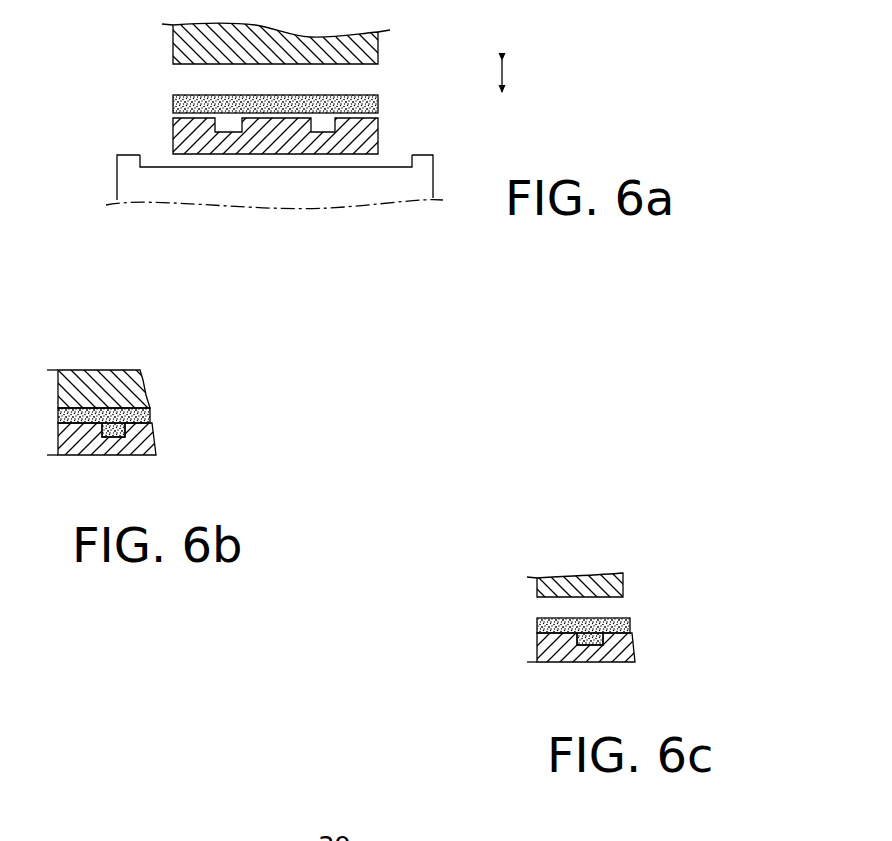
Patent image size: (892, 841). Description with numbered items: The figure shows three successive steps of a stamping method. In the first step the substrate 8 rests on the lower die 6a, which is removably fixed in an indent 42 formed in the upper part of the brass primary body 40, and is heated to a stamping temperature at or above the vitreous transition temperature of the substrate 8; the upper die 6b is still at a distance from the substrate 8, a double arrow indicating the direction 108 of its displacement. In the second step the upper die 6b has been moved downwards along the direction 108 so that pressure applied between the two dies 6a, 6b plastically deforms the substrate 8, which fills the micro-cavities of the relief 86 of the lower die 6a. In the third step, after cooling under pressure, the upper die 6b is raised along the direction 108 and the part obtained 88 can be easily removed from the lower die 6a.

In FIG. 6a, the lower die 6a is at (378, 140).
In FIG. 6b, the lower die 6a is at (156, 435).
In FIG. 6c, the lower die 6a is at (636, 640).
In FIG. 6a, the upper die 6b is at (378, 45).
In FIG. 6b, the upper die 6b is at (145, 378).
In FIG. 6c, the upper die 6b is at (623, 582).
In FIG. 6a, the substrate 8 is at (173, 97).
In FIG. 6b, the substrate 8 is at (150, 413).
In FIG. 6c, the substrate 8 is at (630, 620).
In FIG. 6a, the primary body 40 is at (127, 183).
In FIG. 6a, the indent 42 is at (147, 155).
In FIG. 6a, the relief 86 is at (330, 113).
In FIG. 6b, the relief 86 is at (118, 440).
In FIG. 6c, the relief 86 is at (600, 650).
In FIG. 6c, the part obtained 88 is at (535, 618).
In FIG. 6a, the direction 108 is at (502, 75).